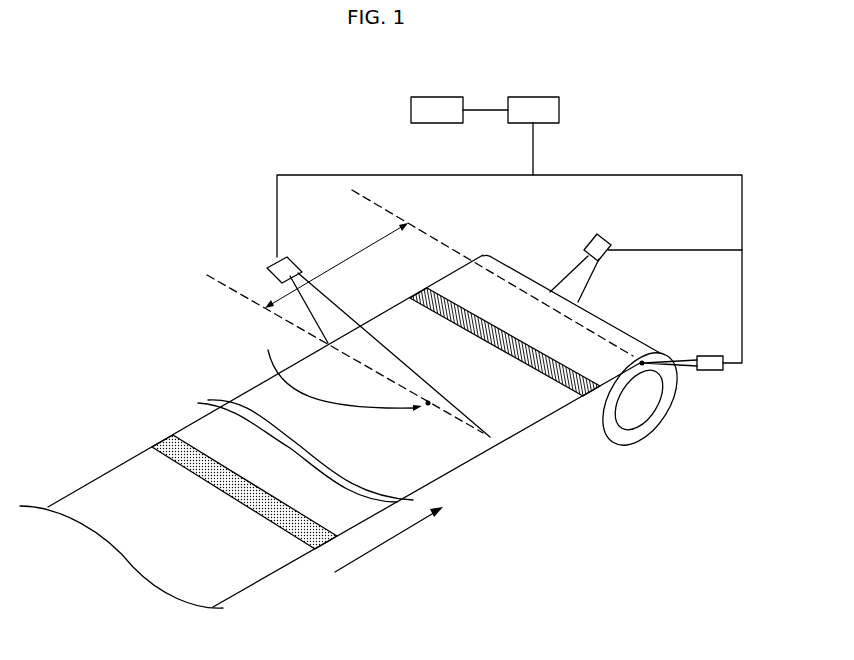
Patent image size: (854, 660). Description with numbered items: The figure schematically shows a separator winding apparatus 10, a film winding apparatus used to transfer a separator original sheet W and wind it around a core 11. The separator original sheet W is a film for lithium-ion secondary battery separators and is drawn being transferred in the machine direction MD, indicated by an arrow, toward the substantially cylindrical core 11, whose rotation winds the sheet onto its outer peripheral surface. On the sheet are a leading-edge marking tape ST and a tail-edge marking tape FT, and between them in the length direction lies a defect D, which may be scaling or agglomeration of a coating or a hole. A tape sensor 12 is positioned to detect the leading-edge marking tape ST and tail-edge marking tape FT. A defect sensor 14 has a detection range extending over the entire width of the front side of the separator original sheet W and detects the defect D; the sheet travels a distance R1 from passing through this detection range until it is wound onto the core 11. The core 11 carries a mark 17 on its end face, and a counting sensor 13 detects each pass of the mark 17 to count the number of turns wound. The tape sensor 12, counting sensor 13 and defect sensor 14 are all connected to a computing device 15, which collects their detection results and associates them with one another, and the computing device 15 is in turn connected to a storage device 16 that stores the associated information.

The separator winding apparatus 10 is at (98, 149).
The core 11 is at (638, 432).
The tape sensor 12 is at (608, 243).
The counting sensor 13 is at (708, 356).
The defect sensor 14 is at (268, 265).
The computing device 15 is at (536, 97).
The storage device 16 is at (438, 97).
The mark 17 is at (648, 373).
The separator original sheet W is at (500, 391).
The tail-edge marking tape FT is at (157, 438).
The leading-edge marking tape ST is at (413, 287).
The defect D is at (348, 370).
The distance R1 is at (371, 246).
The machine direction MD is at (393, 538).